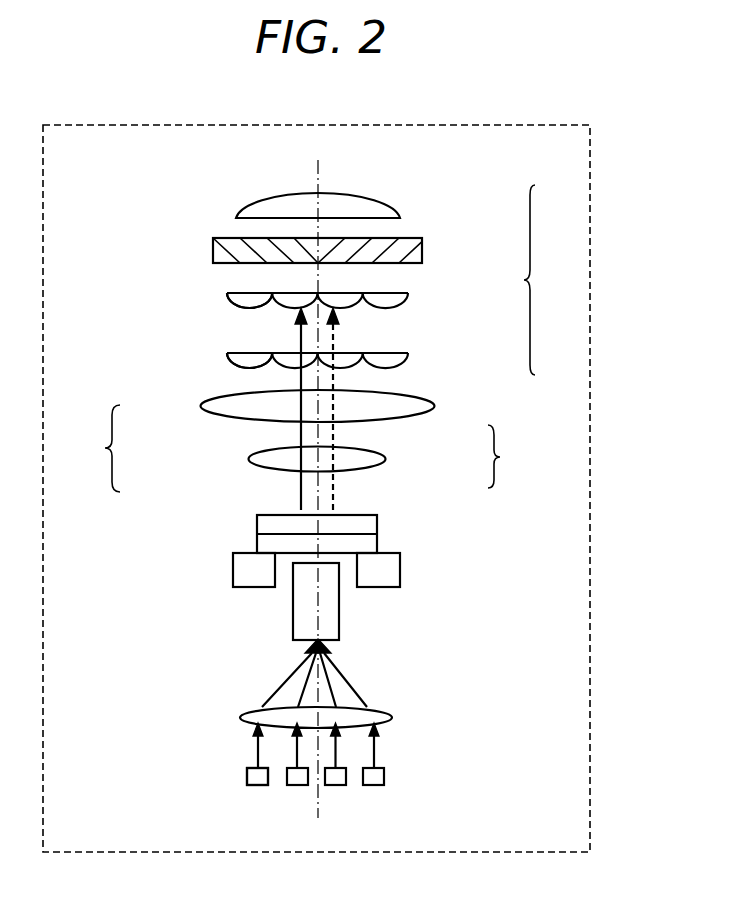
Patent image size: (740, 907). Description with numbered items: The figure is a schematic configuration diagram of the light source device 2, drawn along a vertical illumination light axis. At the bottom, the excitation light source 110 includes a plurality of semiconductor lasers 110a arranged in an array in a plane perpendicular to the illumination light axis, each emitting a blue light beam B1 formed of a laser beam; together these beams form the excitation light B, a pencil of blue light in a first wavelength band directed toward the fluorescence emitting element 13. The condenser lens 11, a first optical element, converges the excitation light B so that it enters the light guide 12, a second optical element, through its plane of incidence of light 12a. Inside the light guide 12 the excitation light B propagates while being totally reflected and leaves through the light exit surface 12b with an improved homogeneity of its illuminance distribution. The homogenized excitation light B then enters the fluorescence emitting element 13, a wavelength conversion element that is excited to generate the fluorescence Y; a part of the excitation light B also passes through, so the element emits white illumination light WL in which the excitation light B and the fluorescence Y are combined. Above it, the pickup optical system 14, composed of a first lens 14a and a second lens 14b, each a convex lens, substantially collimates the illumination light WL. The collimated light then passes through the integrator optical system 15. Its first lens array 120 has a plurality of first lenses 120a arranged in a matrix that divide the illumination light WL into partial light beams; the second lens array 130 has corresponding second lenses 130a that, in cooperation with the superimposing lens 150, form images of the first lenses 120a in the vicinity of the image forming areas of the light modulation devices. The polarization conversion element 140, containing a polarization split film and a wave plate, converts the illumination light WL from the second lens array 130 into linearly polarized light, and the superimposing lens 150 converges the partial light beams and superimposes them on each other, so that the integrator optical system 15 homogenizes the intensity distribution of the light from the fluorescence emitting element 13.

The light source device 2 is at (590, 742).
The condenser lens 11 is at (385, 721).
The light guide 12 is at (352, 608).
The plane of incidence of light 12a is at (303, 645).
The light exit surface 12b is at (300, 562).
The fluorescence emitting element 13 is at (400, 536).
The pickup optical system 14 is at (92, 448).
The first lens 14a is at (250, 463).
The second lens 14b is at (215, 417).
The integrator optical system 15 is at (547, 280).
The excitation light source 110 is at (395, 779).
The semiconductor lasers 110a is at (248, 776).
The first lens array 120 is at (408, 362).
The first lenses 120a is at (227, 358).
The second lens array 130 is at (408, 296).
The second lenses 130a is at (227, 298).
The polarization conversion element 140 is at (422, 256).
The superimposing lens 150 is at (400, 218).
The excitation light B is at (301, 500).
The blue light beams B1 is at (378, 757).
The fluorescence Y is at (333, 482).
The illumination light WL is at (512, 456).